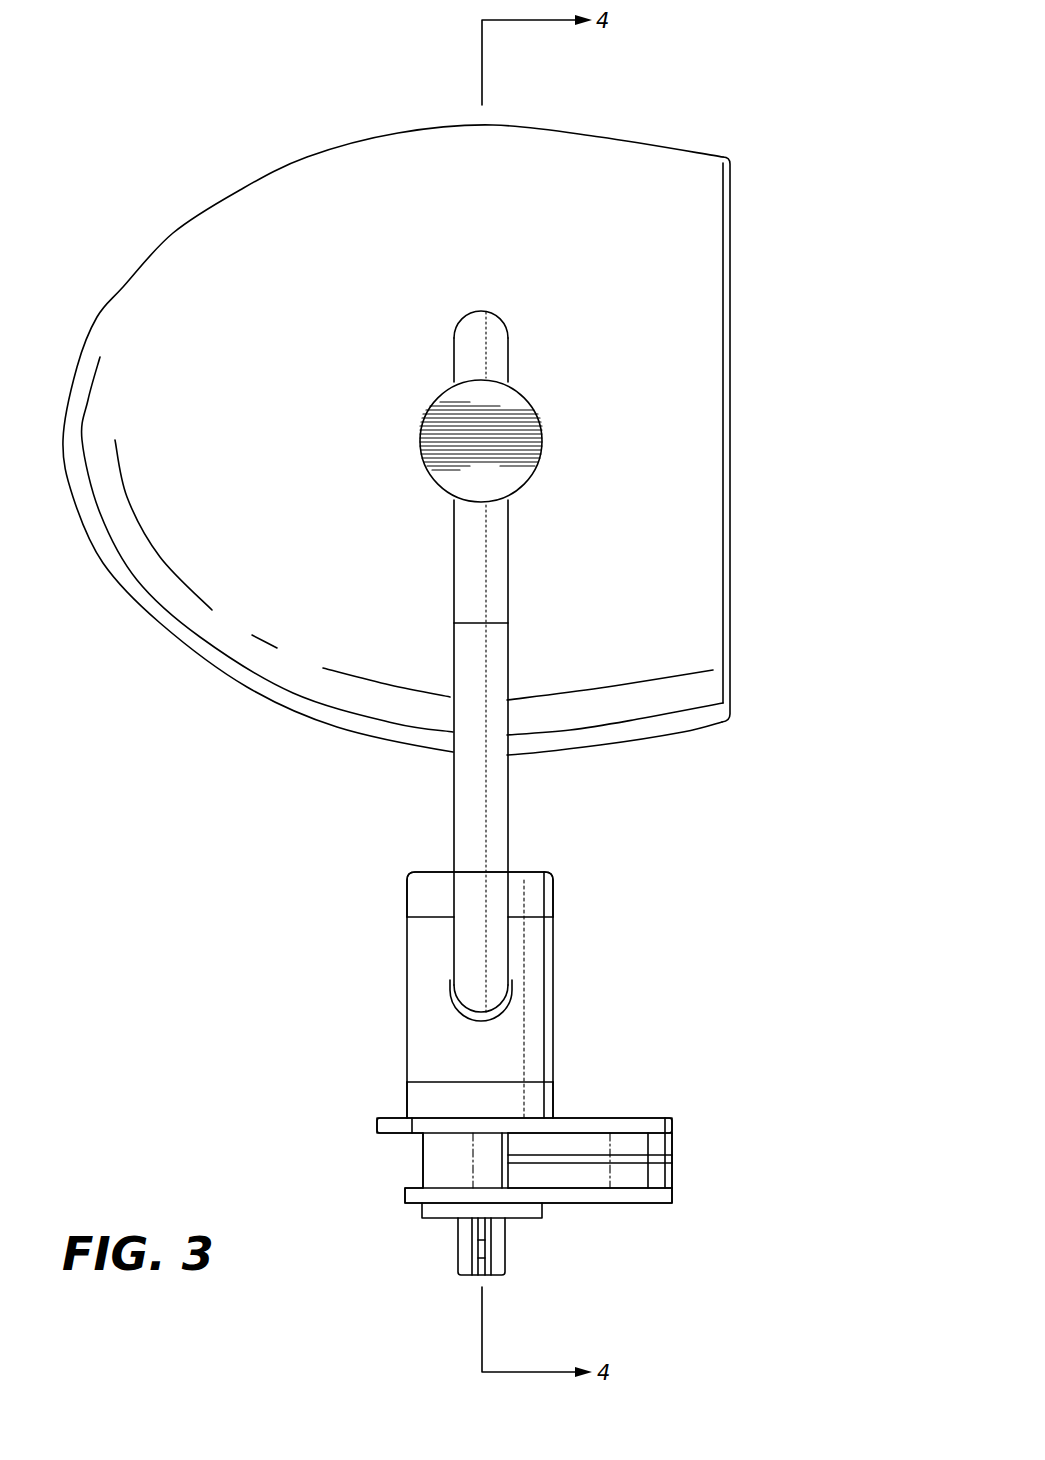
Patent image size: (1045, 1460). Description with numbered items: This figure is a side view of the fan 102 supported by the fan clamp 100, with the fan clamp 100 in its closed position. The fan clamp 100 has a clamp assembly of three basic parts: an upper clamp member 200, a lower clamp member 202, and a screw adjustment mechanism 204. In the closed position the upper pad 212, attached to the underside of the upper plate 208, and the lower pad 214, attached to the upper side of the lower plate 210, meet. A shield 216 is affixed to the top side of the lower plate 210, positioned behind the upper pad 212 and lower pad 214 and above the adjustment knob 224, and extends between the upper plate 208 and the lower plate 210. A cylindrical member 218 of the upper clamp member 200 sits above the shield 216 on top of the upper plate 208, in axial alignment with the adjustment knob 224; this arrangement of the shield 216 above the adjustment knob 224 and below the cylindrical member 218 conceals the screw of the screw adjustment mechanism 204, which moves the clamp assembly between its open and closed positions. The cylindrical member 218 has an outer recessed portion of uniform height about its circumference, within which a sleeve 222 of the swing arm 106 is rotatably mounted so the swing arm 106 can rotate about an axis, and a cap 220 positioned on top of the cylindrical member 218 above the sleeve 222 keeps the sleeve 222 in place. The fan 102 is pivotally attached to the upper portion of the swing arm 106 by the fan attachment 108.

The fan clamp 100 is at (320, 932).
The fan 102 is at (530, 158).
The swing arm 106 is at (508, 802).
The fan attachment 108 is at (433, 400).
The upper clamp member 200 is at (566, 1103).
The lower clamp member 202 is at (556, 1215).
The screw adjustment mechanism 204 is at (445, 1254).
The upper plate 208 is at (630, 1117).
The lower plate 210 is at (638, 1203).
The upper pad 212 is at (658, 1140).
The lower pad 214 is at (658, 1172).
The shield 216 is at (432, 1172).
The cylindrical member 218 is at (410, 1092).
The cap 220 is at (545, 893).
The sleeve 222 is at (553, 968).
The adjustment knob 224 is at (487, 1275).